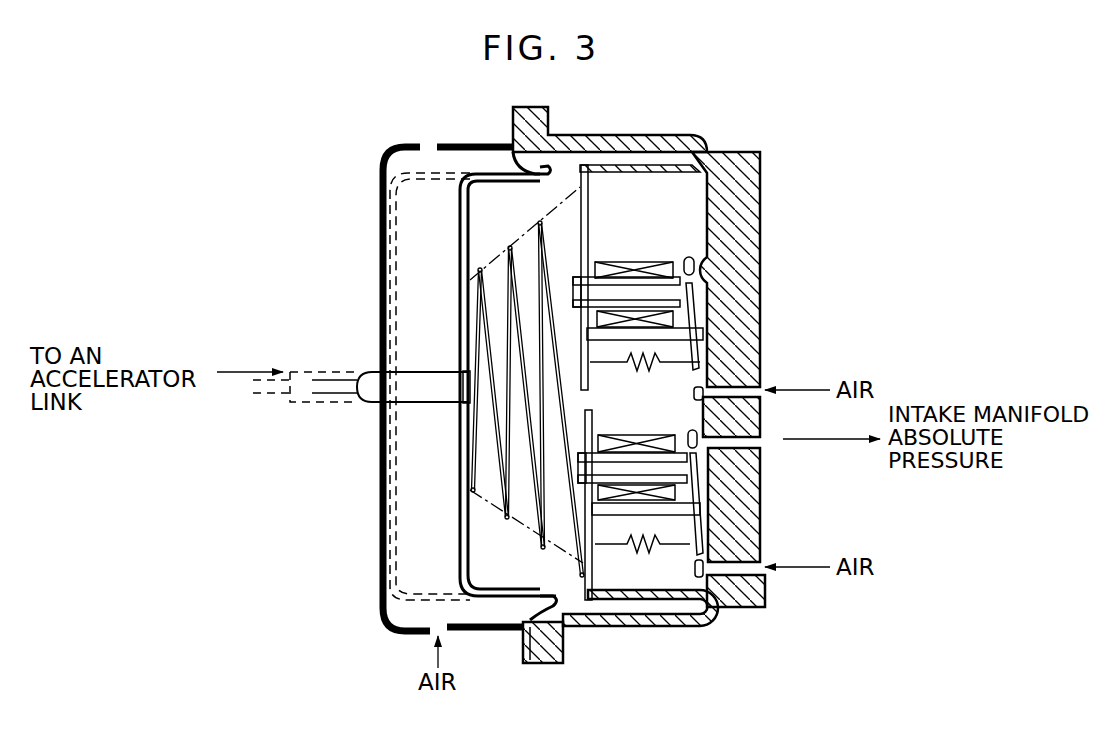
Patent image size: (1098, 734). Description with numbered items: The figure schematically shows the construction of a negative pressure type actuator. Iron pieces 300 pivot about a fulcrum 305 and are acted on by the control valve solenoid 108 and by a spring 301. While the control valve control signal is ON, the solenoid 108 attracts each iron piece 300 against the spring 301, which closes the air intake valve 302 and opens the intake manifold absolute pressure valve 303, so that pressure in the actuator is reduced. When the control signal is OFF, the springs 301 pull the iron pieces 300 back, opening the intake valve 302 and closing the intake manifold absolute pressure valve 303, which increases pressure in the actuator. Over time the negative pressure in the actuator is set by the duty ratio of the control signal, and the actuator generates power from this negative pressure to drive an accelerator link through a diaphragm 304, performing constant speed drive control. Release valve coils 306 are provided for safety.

The diaphragm 304 is at (480, 176).
The release valve coils 306 is at (658, 260).
The control valve solenoid 108 is at (722, 430).
The intake manifold absolute pressure valve 303 is at (712, 478).
The iron pieces 300 is at (695, 503).
The air intake valve 302 is at (712, 548).
The spring 301 is at (638, 552).
The fulcrum 305 is at (684, 536).